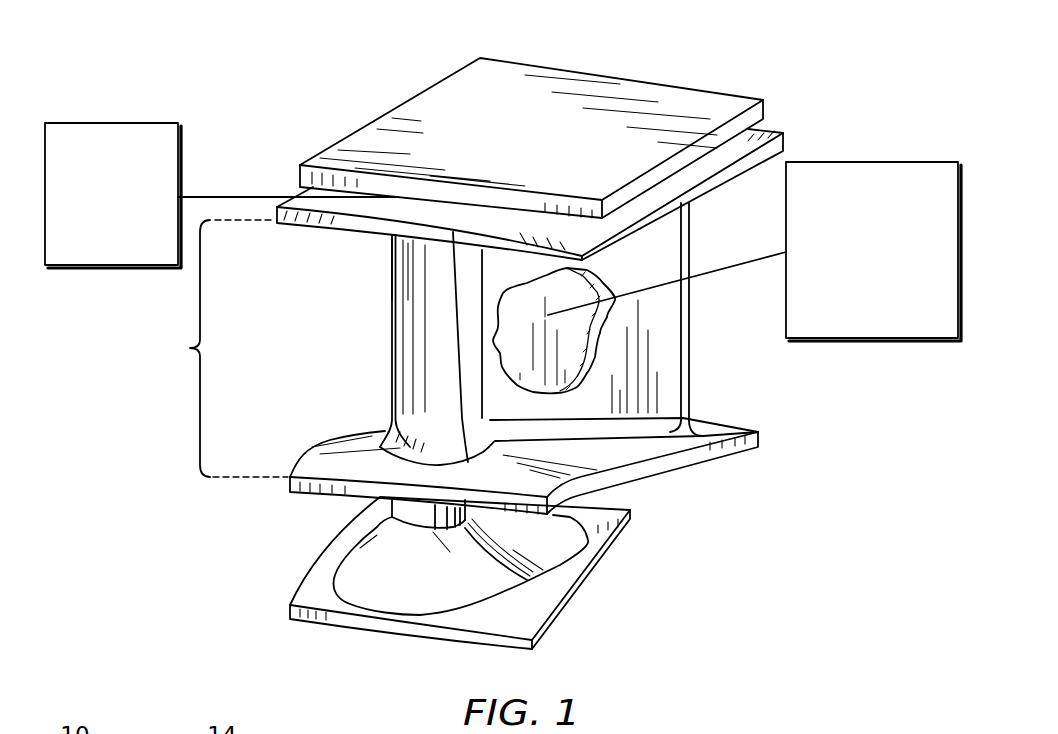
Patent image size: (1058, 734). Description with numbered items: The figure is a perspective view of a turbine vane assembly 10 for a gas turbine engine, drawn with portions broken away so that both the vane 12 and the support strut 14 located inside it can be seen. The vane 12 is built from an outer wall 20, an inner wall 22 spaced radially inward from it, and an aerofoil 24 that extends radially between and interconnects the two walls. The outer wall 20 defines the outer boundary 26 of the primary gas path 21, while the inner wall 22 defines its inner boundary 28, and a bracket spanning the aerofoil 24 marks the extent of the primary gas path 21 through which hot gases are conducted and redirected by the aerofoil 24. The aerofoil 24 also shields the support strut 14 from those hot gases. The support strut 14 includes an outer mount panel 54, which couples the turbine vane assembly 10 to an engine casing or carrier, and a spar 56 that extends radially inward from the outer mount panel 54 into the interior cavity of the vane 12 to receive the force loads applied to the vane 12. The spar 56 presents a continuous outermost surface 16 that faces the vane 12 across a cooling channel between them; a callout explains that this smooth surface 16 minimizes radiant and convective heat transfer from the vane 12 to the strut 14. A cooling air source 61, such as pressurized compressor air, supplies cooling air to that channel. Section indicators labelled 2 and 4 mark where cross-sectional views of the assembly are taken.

The turbine vane assembly 10 is at (240, 84).
The vane 12 is at (340, 280).
The support strut 14 is at (318, 547).
The continuous outermost surface 16 is at (903, 162).
The outer wall 20 is at (795, 138).
The primary gas path 21 is at (179, 348).
The inner wall 22 is at (770, 437).
The aerofoil 24 is at (378, 389).
The outer boundary 26 is at (232, 223).
The inner boundary 28 is at (220, 480).
The outer mount panel 54 is at (383, 112).
The spar 56 is at (578, 289).
The cooling air source 61 is at (100, 122).
The section line 2 is at (370, 342).
The section line 4 is at (448, 63).